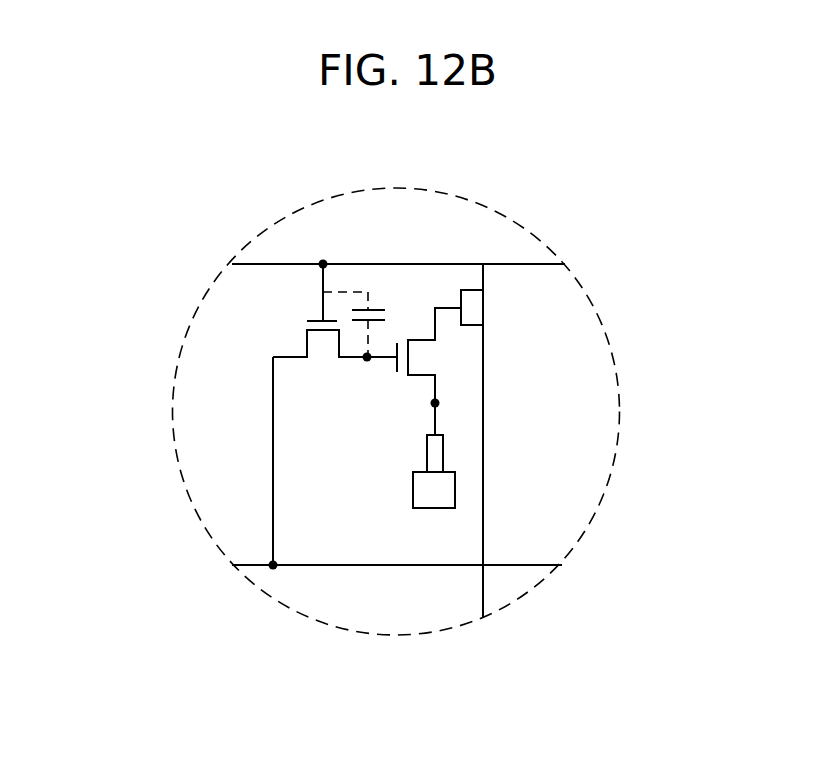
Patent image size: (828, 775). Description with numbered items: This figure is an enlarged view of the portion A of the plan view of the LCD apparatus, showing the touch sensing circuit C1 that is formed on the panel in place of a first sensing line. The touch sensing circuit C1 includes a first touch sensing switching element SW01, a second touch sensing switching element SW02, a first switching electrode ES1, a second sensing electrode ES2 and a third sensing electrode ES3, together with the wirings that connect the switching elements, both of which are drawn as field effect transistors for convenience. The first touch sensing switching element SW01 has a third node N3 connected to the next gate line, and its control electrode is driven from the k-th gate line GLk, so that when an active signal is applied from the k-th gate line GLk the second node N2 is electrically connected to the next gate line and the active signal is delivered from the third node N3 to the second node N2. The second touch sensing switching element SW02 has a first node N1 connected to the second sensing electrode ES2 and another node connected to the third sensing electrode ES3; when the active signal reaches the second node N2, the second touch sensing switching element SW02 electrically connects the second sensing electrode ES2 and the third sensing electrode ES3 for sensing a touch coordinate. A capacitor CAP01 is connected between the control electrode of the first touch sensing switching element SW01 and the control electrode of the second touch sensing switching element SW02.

The portion A is at (400, 636).
The k-th gate line GLk is at (236, 264).
The touch sensing circuit C1 is at (493, 438).
The first touch sensing switching element SW01 is at (335, 414).
The second touch sensing switching element SW02 is at (432, 371).
The capacitor CAP01 is at (378, 310).
The third sensing electrode ES3 is at (471, 290).
The second sensing electrode ES2 is at (427, 448).
The first switching electrode ES1 is at (413, 490).
The first node N1 is at (432, 407).
The second node N2 is at (367, 361).
The third node N3 is at (273, 568).